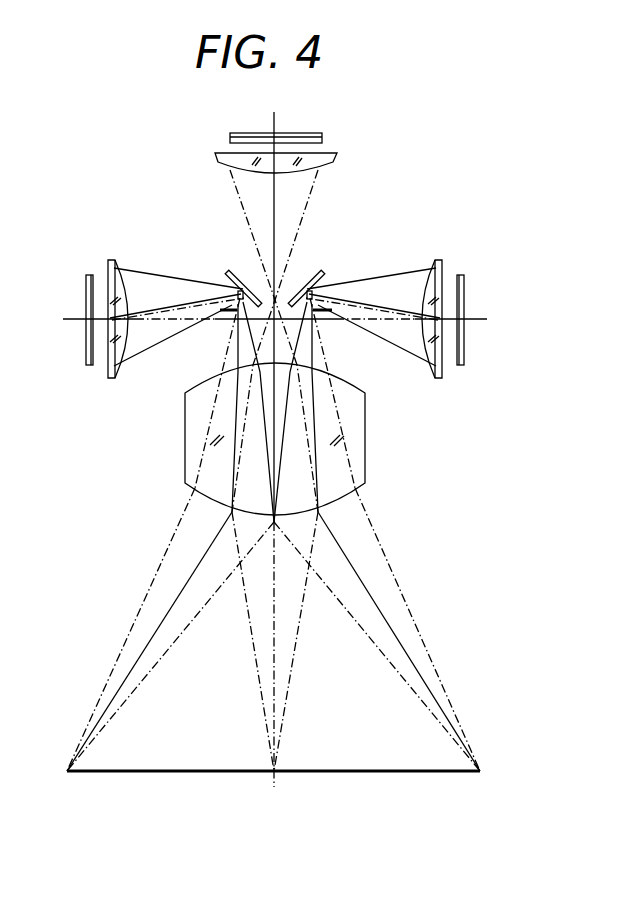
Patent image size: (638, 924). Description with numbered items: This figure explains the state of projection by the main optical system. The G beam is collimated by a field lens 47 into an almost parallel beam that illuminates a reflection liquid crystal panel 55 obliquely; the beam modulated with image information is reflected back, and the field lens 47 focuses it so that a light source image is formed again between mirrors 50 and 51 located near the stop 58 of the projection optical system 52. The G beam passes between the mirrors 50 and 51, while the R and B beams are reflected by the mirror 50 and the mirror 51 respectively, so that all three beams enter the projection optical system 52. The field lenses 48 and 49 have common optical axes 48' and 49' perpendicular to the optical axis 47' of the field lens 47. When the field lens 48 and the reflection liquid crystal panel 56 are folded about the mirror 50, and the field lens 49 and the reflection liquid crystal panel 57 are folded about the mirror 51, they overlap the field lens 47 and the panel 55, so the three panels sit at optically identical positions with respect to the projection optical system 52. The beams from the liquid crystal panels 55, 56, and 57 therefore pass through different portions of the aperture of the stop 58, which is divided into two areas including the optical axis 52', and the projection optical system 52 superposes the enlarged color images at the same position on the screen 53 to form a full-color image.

The field lens 47 is at (313, 155).
The optical axis of the field lens 47 47' is at (305, 341).
The field lens 48 is at (167, 288).
The optical axis of the field lens 48 48' is at (178, 272).
The field lens 49 is at (380, 288).
The optical axis of the field lens 49 49' is at (372, 272).
The mirror 50 is at (230, 268).
The mirror 51 is at (320, 268).
The projection optical system 52 is at (312, 410).
The optical axis of the projection optical system 52' is at (273, 637).
The screen 53 is at (182, 768).
The reflection liquid crystal panel 55 is at (322, 136).
The reflection liquid crystal panel 56 is at (88, 366).
The reflection liquid crystal panel 57 is at (462, 366).
The stop 58 is at (328, 313).